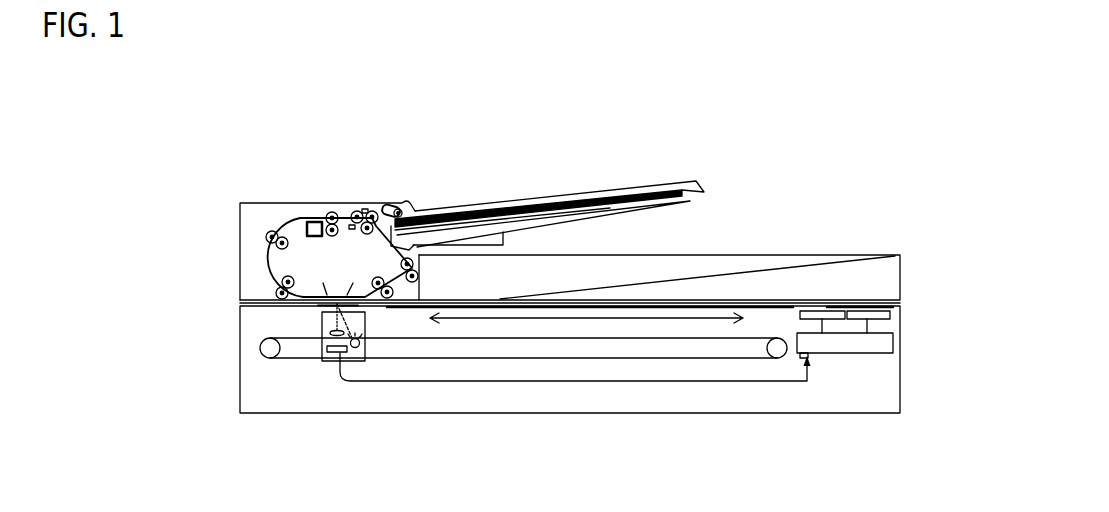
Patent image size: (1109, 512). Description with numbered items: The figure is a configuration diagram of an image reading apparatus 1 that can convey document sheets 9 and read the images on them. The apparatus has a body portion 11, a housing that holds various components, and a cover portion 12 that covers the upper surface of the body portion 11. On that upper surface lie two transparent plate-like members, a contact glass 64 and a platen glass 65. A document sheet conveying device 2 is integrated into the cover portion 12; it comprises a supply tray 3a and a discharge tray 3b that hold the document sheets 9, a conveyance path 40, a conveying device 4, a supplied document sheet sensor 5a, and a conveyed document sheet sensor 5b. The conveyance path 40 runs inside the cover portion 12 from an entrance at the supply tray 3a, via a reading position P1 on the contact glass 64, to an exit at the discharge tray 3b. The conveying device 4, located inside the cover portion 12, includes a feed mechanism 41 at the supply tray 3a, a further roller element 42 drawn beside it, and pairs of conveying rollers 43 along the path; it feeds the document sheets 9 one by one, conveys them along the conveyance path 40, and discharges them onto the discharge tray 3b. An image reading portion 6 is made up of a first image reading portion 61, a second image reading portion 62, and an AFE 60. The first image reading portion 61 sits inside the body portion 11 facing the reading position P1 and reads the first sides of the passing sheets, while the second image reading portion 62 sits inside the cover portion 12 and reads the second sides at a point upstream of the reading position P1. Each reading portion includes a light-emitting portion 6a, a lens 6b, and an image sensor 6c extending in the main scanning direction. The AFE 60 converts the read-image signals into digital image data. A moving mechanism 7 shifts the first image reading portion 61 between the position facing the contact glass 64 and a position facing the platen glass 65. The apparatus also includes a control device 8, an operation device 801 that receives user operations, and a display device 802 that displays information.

The image reading apparatus 1 is at (800, 140).
The document sheet conveying device 2 is at (457, 184).
The supply tray 3a is at (530, 228).
The discharge tray 3b is at (720, 268).
The conveying device 4 is at (336, 207).
The supplied document sheet sensor 5a is at (582, 214).
The conveyed document sheet sensor 5b is at (352, 230).
The image reading portion 6 is at (395, 263).
The light-emitting portion 6a is at (362, 343).
The lens 6b is at (330, 334).
The image sensor 6c is at (332, 354).
The moving mechanism 7 is at (252, 348).
The control device 8 is at (894, 343).
The document sheets 9 is at (565, 208).
The body portion 11 is at (238, 397).
The cover portion 12 is at (905, 276).
The conveyance path 40 is at (289, 210).
The feed mechanism 41 is at (396, 198).
The separation roller 42 is at (352, 211).
The pairs of conveying rollers 43 is at (266, 235).
The AFE (Analog Front End) 60 is at (811, 360).
The first image reading portion 61 is at (359, 362).
The second image reading portion 62 is at (303, 225).
The contact glass 64 is at (366, 313).
The platen glass 65 is at (768, 302).
The operation device 801 is at (905, 308).
The display device 802 is at (893, 318).
The reading position P1 is at (339, 303).